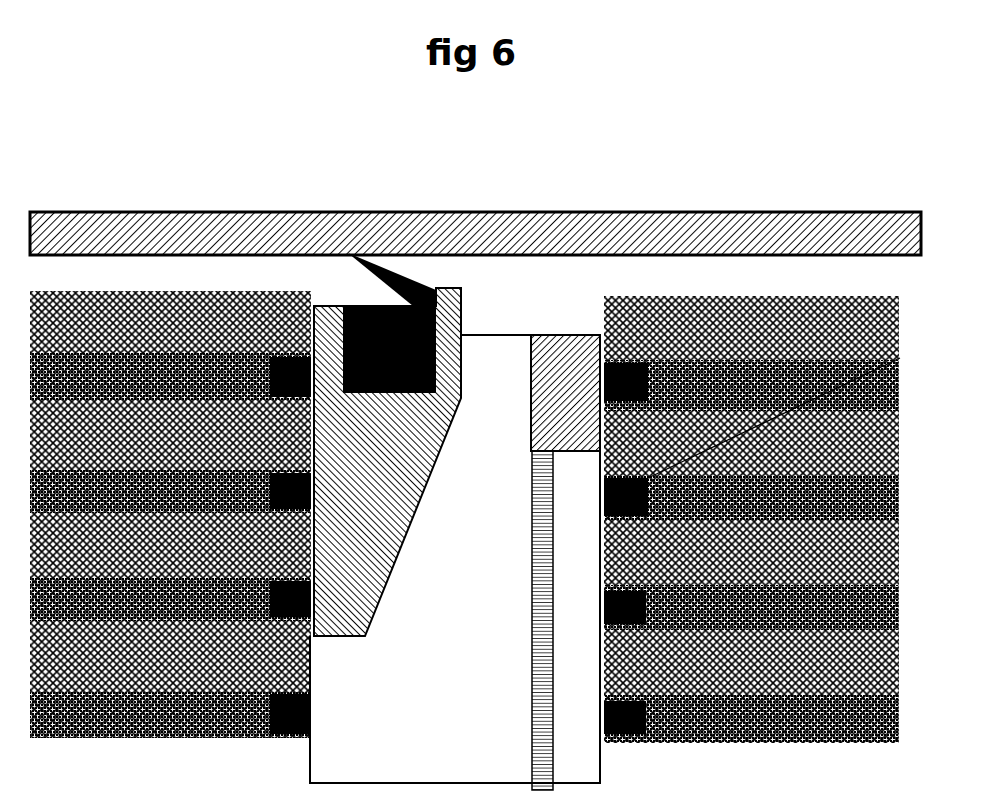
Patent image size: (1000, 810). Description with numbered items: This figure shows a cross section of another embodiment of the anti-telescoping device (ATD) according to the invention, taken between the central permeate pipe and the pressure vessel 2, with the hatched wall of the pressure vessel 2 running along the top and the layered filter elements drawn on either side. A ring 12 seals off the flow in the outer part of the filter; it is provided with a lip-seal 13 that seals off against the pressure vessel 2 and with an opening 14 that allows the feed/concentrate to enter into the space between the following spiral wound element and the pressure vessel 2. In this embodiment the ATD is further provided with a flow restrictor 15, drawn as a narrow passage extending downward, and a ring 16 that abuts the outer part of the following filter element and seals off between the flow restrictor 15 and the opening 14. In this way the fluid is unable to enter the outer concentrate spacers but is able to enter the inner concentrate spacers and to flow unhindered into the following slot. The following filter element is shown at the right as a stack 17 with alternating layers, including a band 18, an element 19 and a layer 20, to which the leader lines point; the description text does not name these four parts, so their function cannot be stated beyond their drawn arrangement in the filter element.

The pressure vessel 2 is at (221, 233).
The ring 12 is at (311, 297).
The lip-seal 13 is at (366, 297).
The opening 14 is at (478, 326).
The flow restrictor 15 is at (535, 480).
The ring 16 is at (588, 332).
The stack 17 is at (623, 333).
The conductor layer 18 is at (866, 497).
The electrode 19 is at (640, 485).
The insulating layer 20 is at (838, 470).